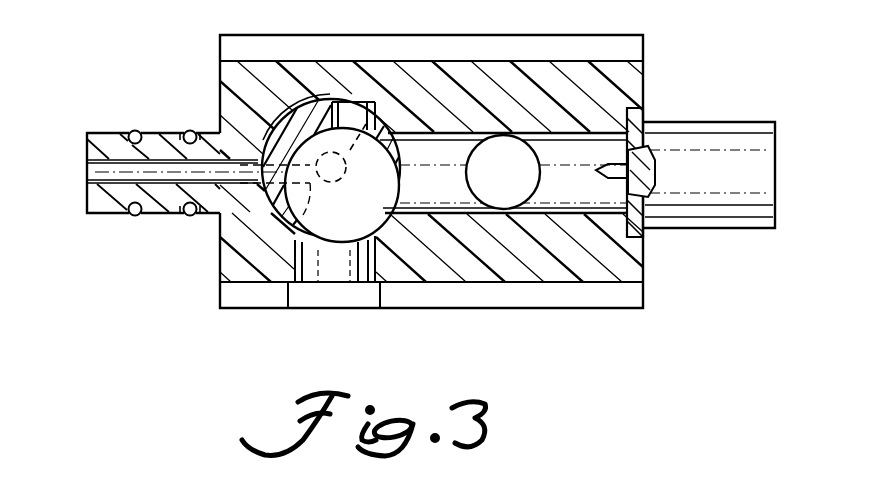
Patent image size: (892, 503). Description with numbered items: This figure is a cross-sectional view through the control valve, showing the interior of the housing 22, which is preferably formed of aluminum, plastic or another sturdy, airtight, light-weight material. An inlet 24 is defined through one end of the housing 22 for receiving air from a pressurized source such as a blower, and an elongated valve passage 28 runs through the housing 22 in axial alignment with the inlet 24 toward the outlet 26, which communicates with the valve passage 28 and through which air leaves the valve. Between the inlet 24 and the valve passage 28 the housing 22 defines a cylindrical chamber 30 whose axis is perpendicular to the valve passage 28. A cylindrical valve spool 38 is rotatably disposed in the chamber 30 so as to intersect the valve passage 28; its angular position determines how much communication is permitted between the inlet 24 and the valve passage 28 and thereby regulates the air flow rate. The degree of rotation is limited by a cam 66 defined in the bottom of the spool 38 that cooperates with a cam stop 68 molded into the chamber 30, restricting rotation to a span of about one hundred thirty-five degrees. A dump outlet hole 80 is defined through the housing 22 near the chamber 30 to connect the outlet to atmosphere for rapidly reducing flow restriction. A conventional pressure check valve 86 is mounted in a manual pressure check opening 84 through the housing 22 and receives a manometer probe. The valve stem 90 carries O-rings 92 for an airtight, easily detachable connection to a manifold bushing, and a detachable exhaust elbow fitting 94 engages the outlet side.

The housing 22 is at (466, 70).
The inlet 24 is at (222, 120).
The outlet 26 is at (508, 206).
The valve passage 28 is at (448, 197).
The chamber 30 is at (372, 218).
The valve spool 38 is at (318, 100).
The cam 66 is at (394, 197).
The cam stop 68 is at (341, 176).
The dump outlet hole 80 is at (346, 272).
The manual pressure check opening 84 is at (612, 178).
The pressure check valve 86 is at (656, 160).
The valve stem 90 is at (190, 216).
The O-rings 92 is at (137, 217).
The exhaust elbow fitting 94 is at (687, 222).